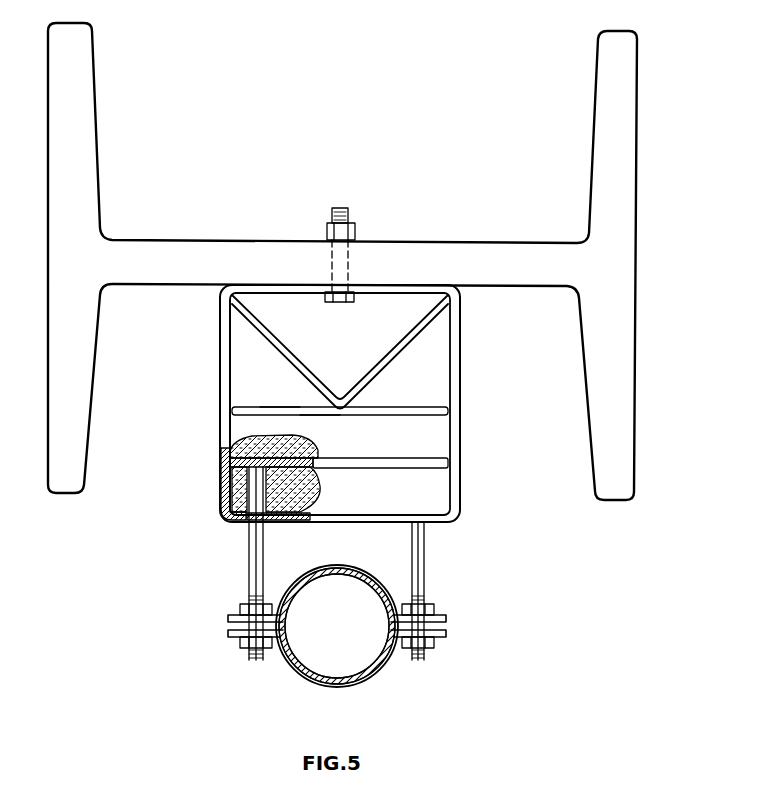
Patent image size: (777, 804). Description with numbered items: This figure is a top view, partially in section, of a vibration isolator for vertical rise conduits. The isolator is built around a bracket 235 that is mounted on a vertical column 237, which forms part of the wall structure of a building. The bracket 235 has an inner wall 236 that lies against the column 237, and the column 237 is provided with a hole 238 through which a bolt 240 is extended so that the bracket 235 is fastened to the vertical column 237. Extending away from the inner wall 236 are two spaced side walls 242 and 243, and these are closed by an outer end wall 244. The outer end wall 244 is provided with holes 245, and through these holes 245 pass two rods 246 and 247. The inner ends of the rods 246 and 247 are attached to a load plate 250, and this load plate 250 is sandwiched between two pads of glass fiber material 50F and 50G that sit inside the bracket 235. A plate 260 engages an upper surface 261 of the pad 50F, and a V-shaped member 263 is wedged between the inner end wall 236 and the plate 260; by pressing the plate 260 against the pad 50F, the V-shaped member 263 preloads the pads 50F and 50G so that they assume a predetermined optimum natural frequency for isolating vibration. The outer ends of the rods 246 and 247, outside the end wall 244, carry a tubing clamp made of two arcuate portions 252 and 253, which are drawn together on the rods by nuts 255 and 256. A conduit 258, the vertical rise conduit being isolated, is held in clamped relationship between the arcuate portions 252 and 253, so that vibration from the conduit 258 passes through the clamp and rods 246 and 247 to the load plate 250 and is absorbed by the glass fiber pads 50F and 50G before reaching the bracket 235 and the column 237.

The vertical column 237 is at (82, 80).
The bolt 240 is at (341, 209).
The hole 238 is at (350, 270).
The inner wall 236 is at (436, 293).
The bracket 235 is at (461, 381).
The V-shaped member 263 is at (389, 361).
The side wall 242 is at (221, 387).
The plate 260 is at (319, 411).
The upper surface 261 is at (277, 401).
The side wall 243 is at (452, 413).
The pad of glass fiber material 50F is at (238, 428).
The load plate 250 is at (345, 466).
The pad of glass fiber material 50G is at (443, 488).
The holes 245 is at (243, 521).
The outer end wall 244 is at (327, 521).
The rod 246 is at (250, 568).
The rod 247 is at (426, 546).
The arcuate portion 253 is at (336, 566).
The nut 255 is at (432, 611).
The nut 256 is at (428, 642).
The conduit 258 is at (372, 662).
The arcuate portion 252 is at (309, 681).